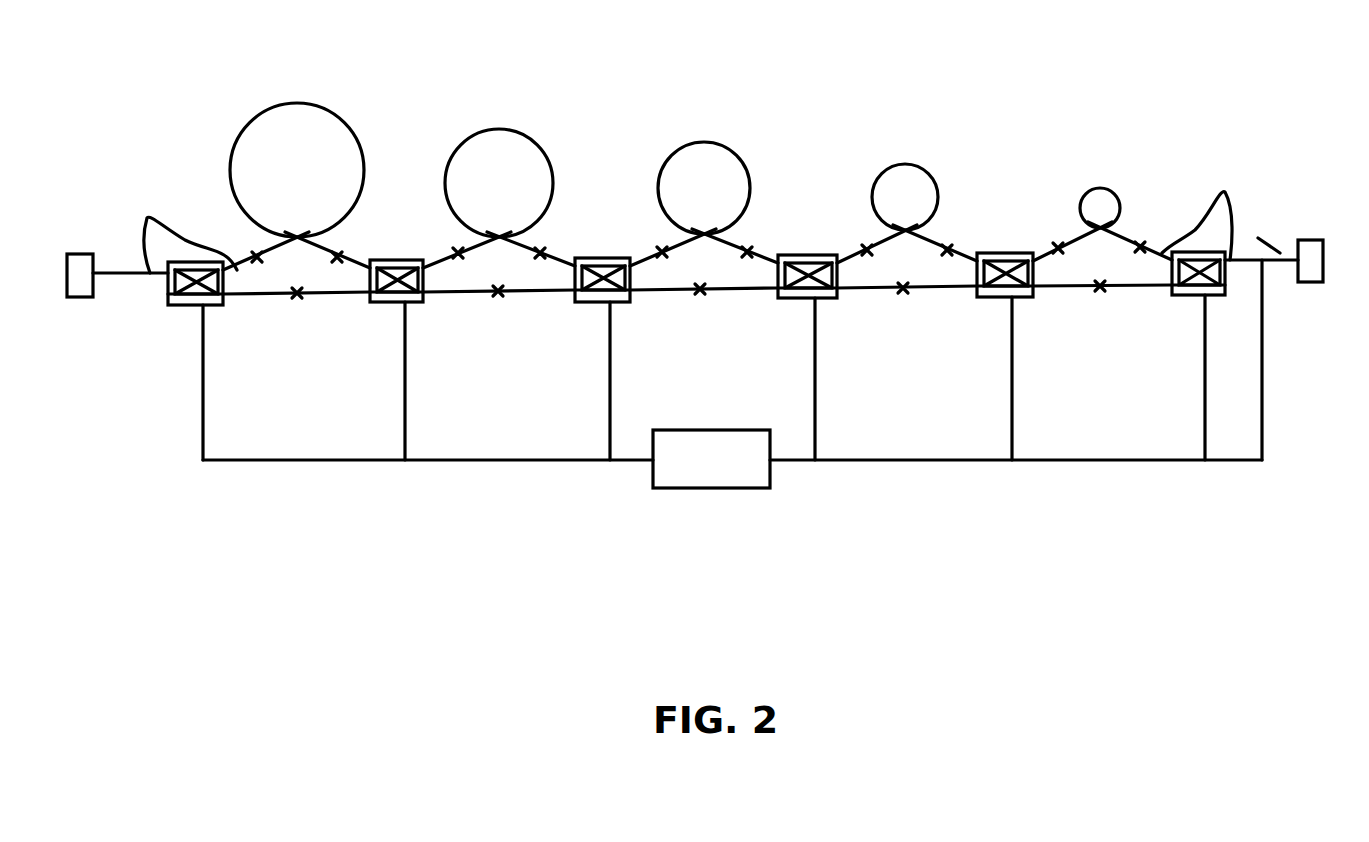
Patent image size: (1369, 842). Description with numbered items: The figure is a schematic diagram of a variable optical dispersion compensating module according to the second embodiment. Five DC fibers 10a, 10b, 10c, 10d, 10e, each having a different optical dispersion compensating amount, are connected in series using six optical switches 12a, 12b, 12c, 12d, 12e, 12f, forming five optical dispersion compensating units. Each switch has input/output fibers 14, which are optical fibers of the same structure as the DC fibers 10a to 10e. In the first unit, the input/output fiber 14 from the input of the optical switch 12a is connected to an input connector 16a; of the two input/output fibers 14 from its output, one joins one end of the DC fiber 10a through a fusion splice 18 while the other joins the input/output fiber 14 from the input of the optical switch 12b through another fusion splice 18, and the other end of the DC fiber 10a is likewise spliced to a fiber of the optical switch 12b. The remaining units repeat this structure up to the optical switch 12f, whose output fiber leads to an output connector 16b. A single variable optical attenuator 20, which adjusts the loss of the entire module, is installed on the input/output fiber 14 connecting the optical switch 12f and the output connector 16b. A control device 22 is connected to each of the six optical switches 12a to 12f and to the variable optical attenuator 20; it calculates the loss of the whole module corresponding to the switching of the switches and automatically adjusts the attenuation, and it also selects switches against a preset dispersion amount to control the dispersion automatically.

The DC fiber 10a is at (297, 103).
The DC fiber 10b is at (499, 129).
The DC fiber 10c is at (704, 142).
The DC fiber 10d is at (905, 164).
The DC fiber 10e is at (1100, 188).
The optical switch 12a is at (197, 305).
The optical switch 12b is at (400, 302).
The optical switch 12c is at (608, 302).
The optical switch 12d is at (812, 298).
The optical switch 12e is at (1007, 297).
The optical switch 12f is at (1200, 295).
The input/output fiber 14 is at (182, 199).
The input connector 16a is at (80, 253).
The output connector 16b is at (1312, 240).
The fusion splice 18 is at (255, 254).
The variable optical attenuator 20 is at (1263, 263).
The control device 22 is at (705, 488).